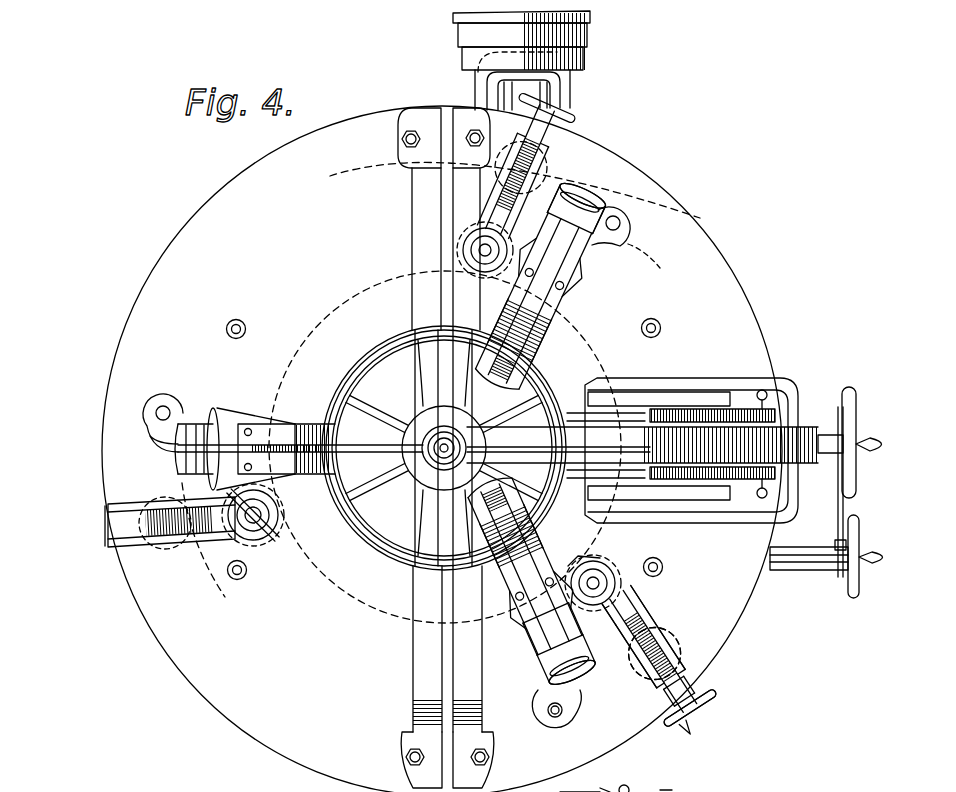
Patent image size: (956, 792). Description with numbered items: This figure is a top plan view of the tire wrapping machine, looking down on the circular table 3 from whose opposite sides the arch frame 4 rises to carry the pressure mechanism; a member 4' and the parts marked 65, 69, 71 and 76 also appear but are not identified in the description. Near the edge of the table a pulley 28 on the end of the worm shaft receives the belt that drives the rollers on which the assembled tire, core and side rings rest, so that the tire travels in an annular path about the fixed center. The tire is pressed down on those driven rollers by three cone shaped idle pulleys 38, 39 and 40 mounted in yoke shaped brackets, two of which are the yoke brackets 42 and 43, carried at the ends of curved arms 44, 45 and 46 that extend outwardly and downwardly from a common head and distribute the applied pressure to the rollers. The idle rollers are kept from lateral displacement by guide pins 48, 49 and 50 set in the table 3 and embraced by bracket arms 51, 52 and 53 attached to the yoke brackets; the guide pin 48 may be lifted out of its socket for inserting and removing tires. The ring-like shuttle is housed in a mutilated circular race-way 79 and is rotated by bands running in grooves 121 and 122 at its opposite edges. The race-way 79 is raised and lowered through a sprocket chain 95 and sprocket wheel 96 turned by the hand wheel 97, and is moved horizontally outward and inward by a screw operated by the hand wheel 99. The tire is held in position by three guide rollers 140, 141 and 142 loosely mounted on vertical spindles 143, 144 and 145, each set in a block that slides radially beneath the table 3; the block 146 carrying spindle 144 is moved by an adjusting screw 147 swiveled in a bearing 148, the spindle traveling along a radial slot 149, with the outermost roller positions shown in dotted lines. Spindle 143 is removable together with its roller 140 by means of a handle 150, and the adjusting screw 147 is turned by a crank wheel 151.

The table 3 is at (442, 449).
The arch frame 4 is at (437, 337).
The lower arm 4' is at (444, 677).
The pulley 28 is at (578, 62).
The cone shaped idle pulley 38 is at (258, 413).
The cone shaped idle pulley 39 is at (568, 296).
The cone shaped idle pulley 40 is at (540, 640).
The yoke shaped bracket 42 is at (562, 222).
The yoke shaped bracket 43 is at (575, 665).
The curved arm 44 is at (444, 448).
The curved arm 45 is at (530, 343).
The curved arm 46 is at (543, 582).
The guide pin 48 is at (165, 408).
The guide pin 49 is at (625, 242).
The guide pin 50 is at (553, 716).
The bracket arm 51 is at (180, 412).
The bracket arm 52 is at (594, 242).
The bracket arm 53 is at (572, 694).
The base 65 is at (578, 781).
The bolt 69 is at (638, 791).
The nut 71 is at (665, 791).
The bracket 76 is at (605, 791).
The mutilated circular race-way 79 is at (655, 450).
The sprocket chain 95 is at (842, 503).
The sprocket wheel 96 is at (840, 572).
The hand wheel 97 is at (860, 586).
The hand wheel 99 is at (850, 470).
The groove 121 is at (698, 486).
The groove 122 is at (692, 410).
The guide roller 140 is at (256, 540).
The guide roller 141 is at (604, 574).
The guide roller 142 is at (480, 232).
The spindle 143 is at (282, 520).
The spindle 144 is at (610, 574).
The spindle 145 is at (480, 256).
The sliding block 146 is at (620, 608).
The adjusting screw 147 is at (664, 652).
The bearing 148 is at (690, 688).
The radial slot 149 is at (650, 632).
The handle 150 is at (234, 540).
The crank wheel 151 is at (672, 722).